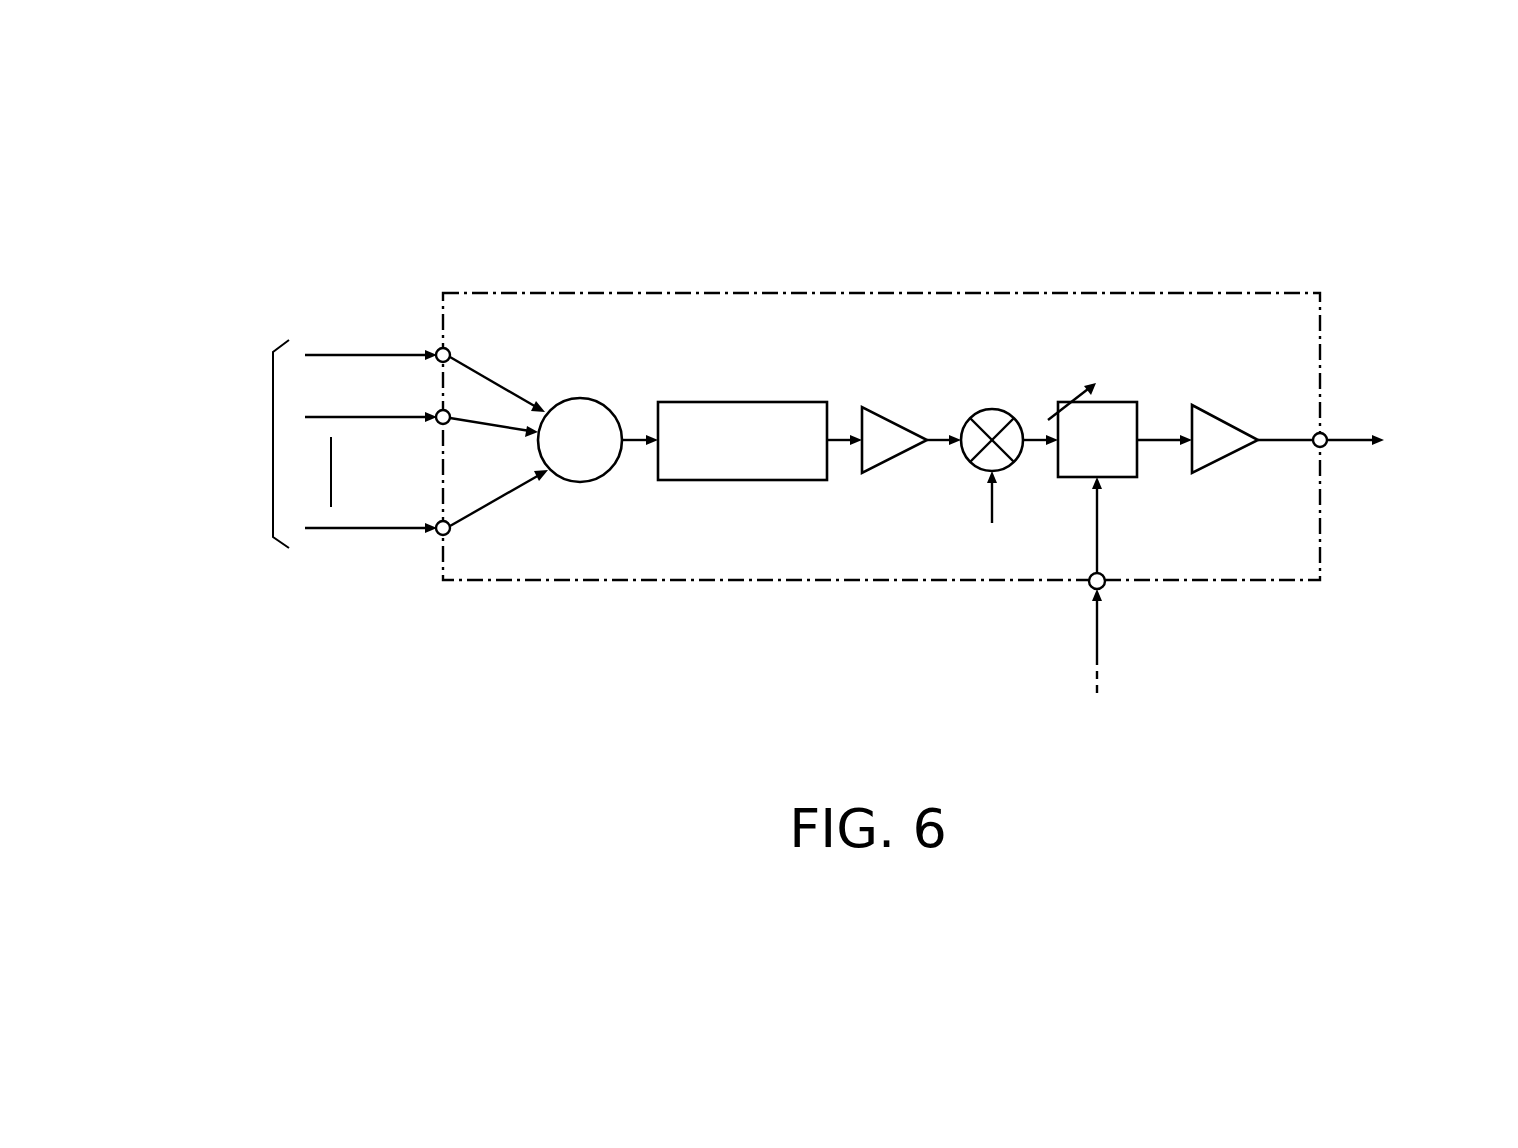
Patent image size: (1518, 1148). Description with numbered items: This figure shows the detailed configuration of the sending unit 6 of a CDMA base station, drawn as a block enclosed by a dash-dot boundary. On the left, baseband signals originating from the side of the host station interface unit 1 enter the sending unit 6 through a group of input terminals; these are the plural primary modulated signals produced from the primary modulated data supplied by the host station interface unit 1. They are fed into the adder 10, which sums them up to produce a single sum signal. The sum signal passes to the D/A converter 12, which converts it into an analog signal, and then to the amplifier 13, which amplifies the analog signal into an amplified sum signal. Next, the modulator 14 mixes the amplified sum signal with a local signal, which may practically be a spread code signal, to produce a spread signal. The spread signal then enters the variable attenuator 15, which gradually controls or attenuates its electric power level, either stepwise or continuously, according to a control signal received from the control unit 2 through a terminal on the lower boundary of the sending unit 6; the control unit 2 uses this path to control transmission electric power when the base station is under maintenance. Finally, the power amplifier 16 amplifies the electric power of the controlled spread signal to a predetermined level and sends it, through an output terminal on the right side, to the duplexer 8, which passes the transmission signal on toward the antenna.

The sending unit 6 is at (880, 286).
The host station interface unit 1 is at (299, 425).
The adder 10 is at (582, 397).
The D/A converter 12 is at (770, 401).
The amplifier 13 is at (897, 415).
The modulator 14 is at (997, 408).
The variable attenuator 15 is at (1125, 401).
The power amplifier 16 is at (1228, 421).
The control unit 2 is at (1094, 601).
The duplexer 8 is at (1367, 454).